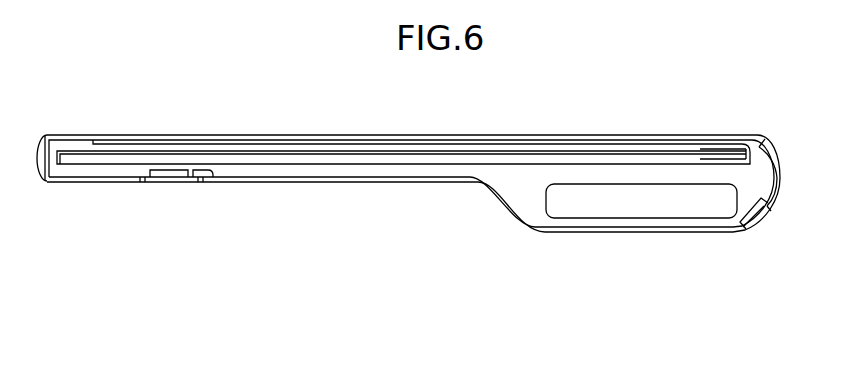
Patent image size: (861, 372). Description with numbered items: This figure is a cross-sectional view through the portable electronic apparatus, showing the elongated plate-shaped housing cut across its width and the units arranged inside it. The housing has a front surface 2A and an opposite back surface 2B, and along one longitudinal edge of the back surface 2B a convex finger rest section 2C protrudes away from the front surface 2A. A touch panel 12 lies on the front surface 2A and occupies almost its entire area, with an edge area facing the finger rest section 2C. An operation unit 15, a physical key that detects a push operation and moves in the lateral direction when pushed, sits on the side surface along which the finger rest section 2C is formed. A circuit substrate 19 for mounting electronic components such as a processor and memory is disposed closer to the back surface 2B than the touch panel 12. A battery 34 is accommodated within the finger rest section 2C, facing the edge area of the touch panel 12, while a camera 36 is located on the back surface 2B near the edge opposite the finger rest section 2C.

The front surface 2A is at (415, 135).
The back surface 2B is at (377, 183).
The finger rest section 2C is at (746, 230).
The touch panel 12 is at (307, 143).
The operation unit 15 is at (783, 177).
The circuit substrate 19 is at (207, 172).
The battery 34 is at (600, 208).
The camera 36 is at (176, 172).